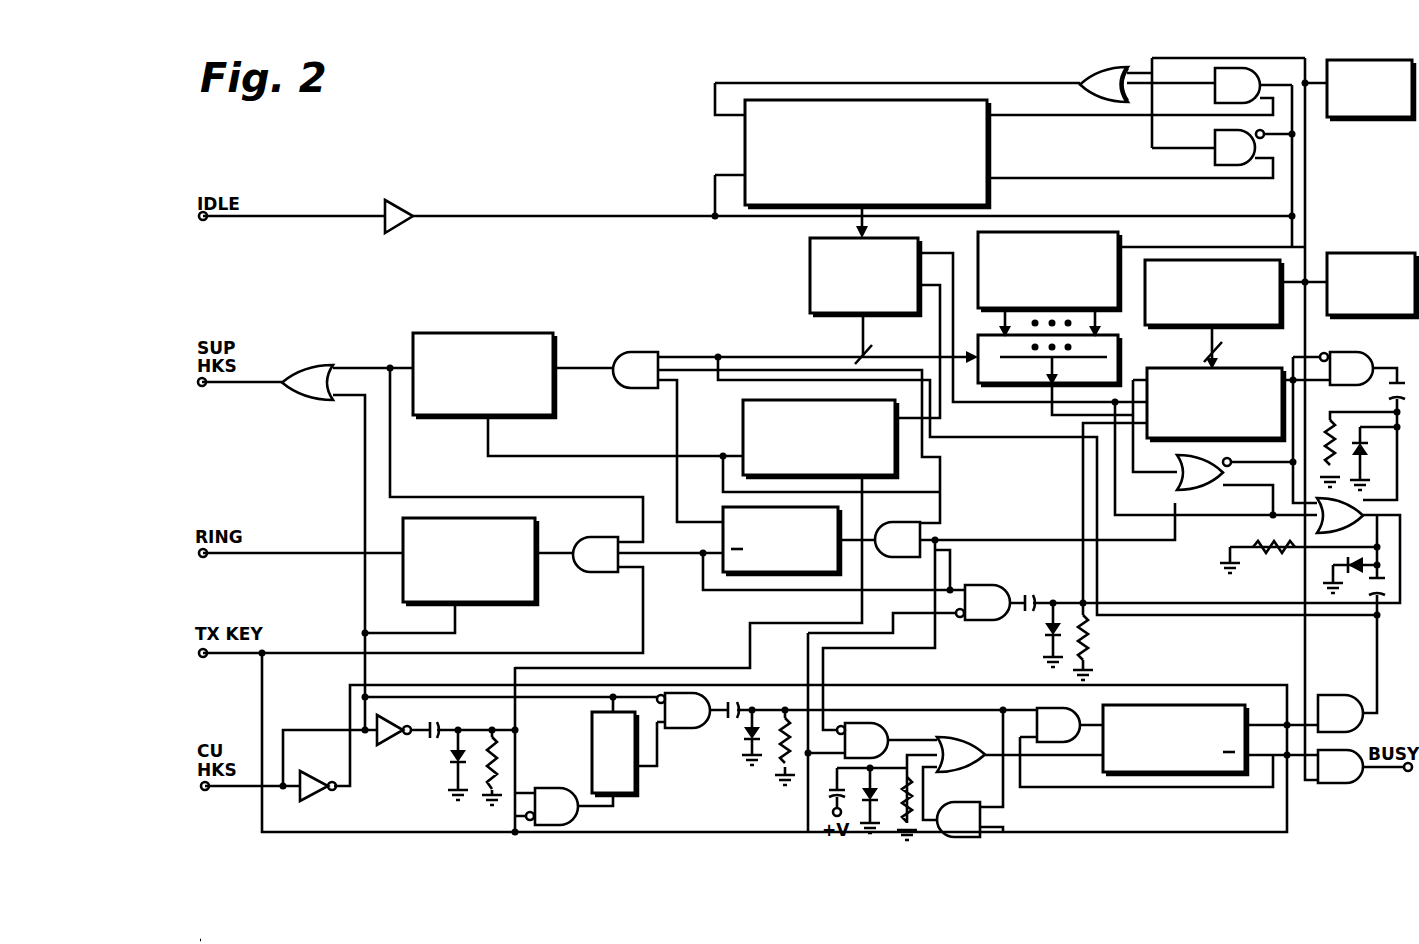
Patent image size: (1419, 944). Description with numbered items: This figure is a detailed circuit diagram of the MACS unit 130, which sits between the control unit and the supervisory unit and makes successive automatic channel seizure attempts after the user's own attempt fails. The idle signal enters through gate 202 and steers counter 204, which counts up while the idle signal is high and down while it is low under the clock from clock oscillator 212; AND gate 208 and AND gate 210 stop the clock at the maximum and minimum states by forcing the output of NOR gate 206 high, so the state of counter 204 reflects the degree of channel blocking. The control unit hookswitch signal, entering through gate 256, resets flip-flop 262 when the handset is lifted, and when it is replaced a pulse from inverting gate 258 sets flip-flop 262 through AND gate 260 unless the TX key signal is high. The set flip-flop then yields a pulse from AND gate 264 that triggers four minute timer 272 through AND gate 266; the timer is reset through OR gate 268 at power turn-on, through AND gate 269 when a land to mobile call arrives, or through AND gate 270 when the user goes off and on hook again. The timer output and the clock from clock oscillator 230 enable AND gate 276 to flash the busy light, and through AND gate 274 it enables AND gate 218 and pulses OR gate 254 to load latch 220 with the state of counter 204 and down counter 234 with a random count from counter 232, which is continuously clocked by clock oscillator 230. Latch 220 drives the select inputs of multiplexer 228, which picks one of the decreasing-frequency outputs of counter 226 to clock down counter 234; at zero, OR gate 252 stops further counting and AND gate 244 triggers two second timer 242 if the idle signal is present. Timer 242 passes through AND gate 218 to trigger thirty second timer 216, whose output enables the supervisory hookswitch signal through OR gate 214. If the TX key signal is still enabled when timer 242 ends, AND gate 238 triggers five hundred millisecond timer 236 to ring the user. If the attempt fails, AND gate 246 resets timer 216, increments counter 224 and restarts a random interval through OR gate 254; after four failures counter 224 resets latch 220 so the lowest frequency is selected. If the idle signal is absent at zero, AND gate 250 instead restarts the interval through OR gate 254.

The MACS unit 130 is at (572, 175).
The inverter 202 is at (395, 222).
The counter 204 is at (990, 163).
The NOR gate 206 is at (1084, 80).
The AND gate 208 is at (1222, 87).
The AND gate 210 is at (1220, 155).
The clock oscillator 212 is at (1383, 118).
The OR gate 214 is at (318, 370).
The thirty second timer 216 is at (513, 340).
The AND gate 218 is at (650, 357).
The latch 220 is at (810, 258).
The counter 224 is at (743, 426).
The counter 226 is at (1118, 246).
The multiplexer 228 is at (1120, 365).
The clock oscillator 230 is at (1368, 246).
The counter 232 is at (1243, 326).
The down counter 234 is at (1178, 440).
The 500 millisecond timer 236 is at (520, 600).
The AND gate 238 is at (601, 546).
The two second timer 242 is at (723, 536).
The AND gate 244 is at (896, 528).
The AND gate 246 is at (996, 595).
The AND gate 250 is at (1356, 362).
The OR gate 252 is at (1183, 476).
The OR gate 254 is at (1320, 522).
The inverter 256 is at (325, 792).
The inverting gate 258 is at (397, 745).
The AND gate 260 is at (550, 797).
The flip-flop 262 is at (637, 790).
The AND gate 264 is at (688, 728).
The AND gate 266 is at (1040, 714).
The OR gate 268 is at (975, 735).
The AND gate 269 is at (880, 735).
The AND gate 270 is at (966, 812).
The four minute timer 272 is at (1245, 712).
The AND gate 274 is at (1343, 705).
The AND gate 276 is at (1343, 783).